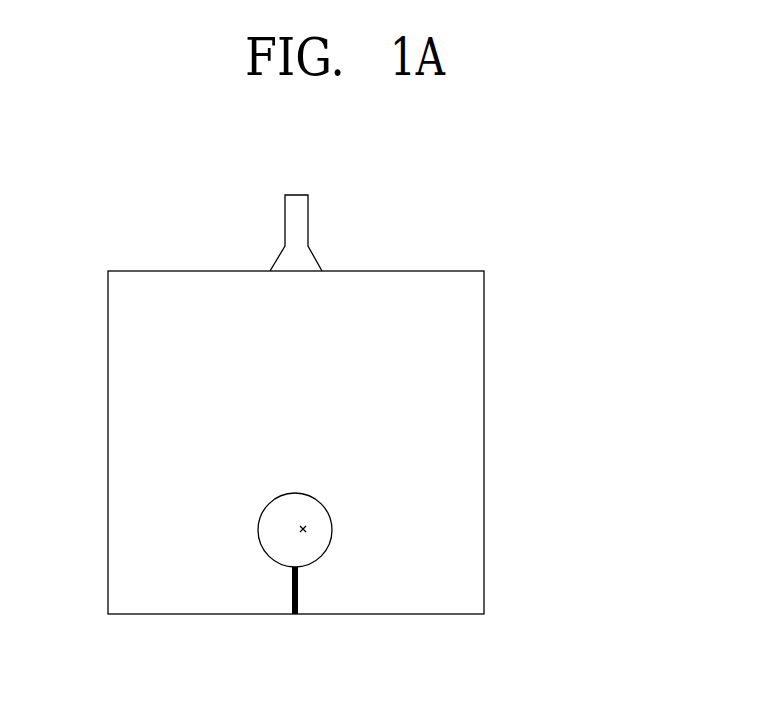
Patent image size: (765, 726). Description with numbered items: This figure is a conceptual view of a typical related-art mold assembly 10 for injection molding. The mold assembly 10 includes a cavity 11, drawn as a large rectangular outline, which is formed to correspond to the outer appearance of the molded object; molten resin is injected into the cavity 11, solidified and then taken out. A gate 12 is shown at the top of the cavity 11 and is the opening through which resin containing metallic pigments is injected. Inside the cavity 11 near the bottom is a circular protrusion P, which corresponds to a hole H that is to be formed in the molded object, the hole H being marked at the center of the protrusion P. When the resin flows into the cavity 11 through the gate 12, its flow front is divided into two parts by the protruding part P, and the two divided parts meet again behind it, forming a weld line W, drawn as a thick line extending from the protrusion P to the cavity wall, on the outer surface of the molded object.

The mold assembly 10 is at (505, 252).
The cavity 11 is at (475, 336).
The gate 12 is at (302, 218).
The protrusion P is at (323, 505).
The hole H is at (307, 529).
The weld line W is at (298, 593).